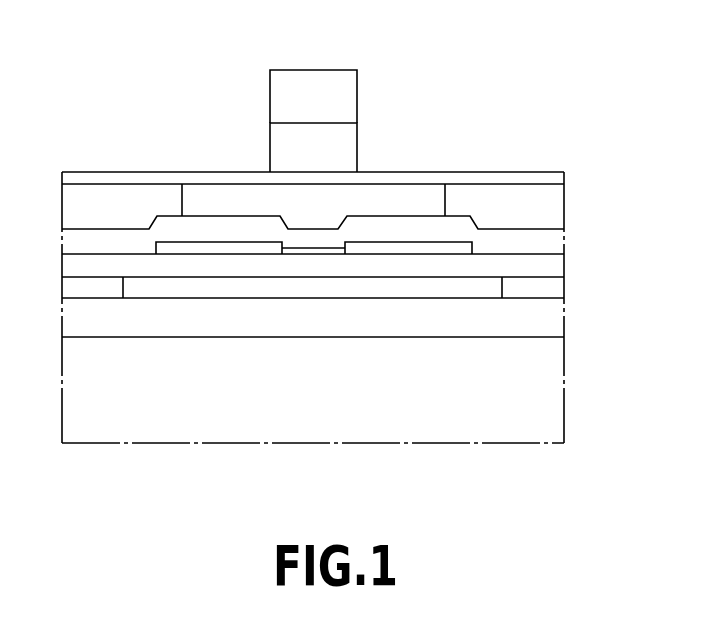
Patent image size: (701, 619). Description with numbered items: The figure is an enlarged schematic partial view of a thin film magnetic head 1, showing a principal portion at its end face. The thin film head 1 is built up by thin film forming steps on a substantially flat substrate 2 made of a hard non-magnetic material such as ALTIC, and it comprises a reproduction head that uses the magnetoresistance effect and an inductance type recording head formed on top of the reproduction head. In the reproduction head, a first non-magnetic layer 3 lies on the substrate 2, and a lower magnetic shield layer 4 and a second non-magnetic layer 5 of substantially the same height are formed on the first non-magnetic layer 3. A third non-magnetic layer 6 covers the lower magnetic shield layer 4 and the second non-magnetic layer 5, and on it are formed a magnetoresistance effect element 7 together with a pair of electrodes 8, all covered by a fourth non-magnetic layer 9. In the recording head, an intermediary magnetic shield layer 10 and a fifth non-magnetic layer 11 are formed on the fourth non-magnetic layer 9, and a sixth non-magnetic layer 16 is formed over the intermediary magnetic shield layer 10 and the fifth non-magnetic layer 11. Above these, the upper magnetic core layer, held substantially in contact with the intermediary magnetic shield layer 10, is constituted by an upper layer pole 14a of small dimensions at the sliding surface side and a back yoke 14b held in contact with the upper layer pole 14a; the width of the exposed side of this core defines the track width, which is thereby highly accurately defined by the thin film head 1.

The thin film magnetic head 1 is at (143, 125).
The substrate 2 is at (553, 403).
The first non-magnetic layer 3 is at (556, 321).
The lower magnetic shield layer 4 is at (478, 289).
The second non-magnetic layer 5 is at (556, 292).
The third non-magnetic layer 6 is at (556, 272).
The magnetoresistance effect element 7 is at (313, 250).
The electrodes 8 is at (229, 250).
The fourth non-magnetic layer 9 is at (556, 243).
The intermediary magnetic shield layer 10 is at (225, 203).
The fifth non-magnetic layer 11 is at (556, 204).
The upper layer pole 14a is at (352, 143).
The back yoke 14b is at (352, 92).
The sixth non-magnetic layer 16 is at (514, 180).